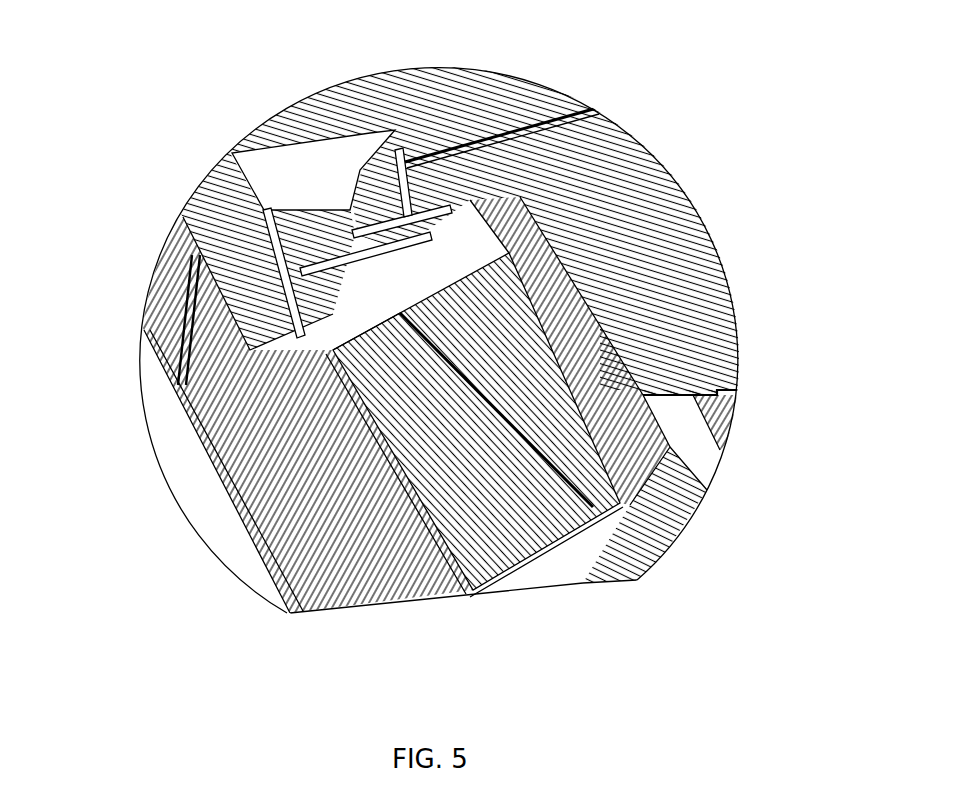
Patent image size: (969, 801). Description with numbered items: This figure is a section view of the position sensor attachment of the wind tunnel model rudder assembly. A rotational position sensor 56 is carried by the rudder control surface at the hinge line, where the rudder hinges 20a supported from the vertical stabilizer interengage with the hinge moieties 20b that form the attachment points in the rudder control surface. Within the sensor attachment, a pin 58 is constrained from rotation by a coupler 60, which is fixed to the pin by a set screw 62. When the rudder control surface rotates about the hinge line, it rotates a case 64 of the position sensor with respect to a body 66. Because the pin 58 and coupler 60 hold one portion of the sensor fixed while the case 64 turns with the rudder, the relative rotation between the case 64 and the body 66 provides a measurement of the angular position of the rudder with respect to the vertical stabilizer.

The rotational position sensor 56 is at (733, 340).
The pin 58 is at (362, 236).
The coupler 60 is at (537, 215).
The set screw 62 is at (200, 178).
The case 64 is at (710, 240).
The body 66 is at (510, 313).
The rudder hinges 20a is at (545, 132).
The hinge moieties 20b is at (173, 333).